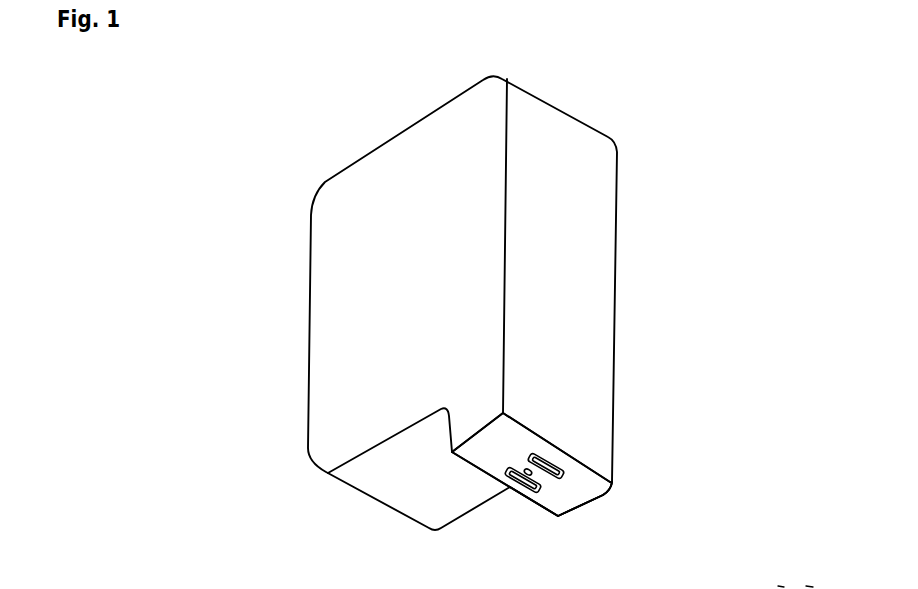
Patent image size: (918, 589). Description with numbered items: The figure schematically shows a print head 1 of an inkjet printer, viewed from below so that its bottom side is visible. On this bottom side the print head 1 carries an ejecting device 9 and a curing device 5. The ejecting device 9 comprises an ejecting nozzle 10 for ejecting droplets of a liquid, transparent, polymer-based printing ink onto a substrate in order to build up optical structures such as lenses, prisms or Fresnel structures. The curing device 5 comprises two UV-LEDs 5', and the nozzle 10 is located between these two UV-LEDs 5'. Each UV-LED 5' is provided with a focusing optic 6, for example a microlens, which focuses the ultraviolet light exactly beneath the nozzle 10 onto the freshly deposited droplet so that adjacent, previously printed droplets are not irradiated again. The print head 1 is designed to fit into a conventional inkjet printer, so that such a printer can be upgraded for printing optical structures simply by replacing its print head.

The print head 1 is at (660, 200).
The curing device 5 is at (506, 517).
The UV-LED 5' is at (545, 483).
The focusing optic 6 is at (527, 470).
The ejecting device 9 is at (591, 531).
The ejecting nozzle 10 is at (525, 467).